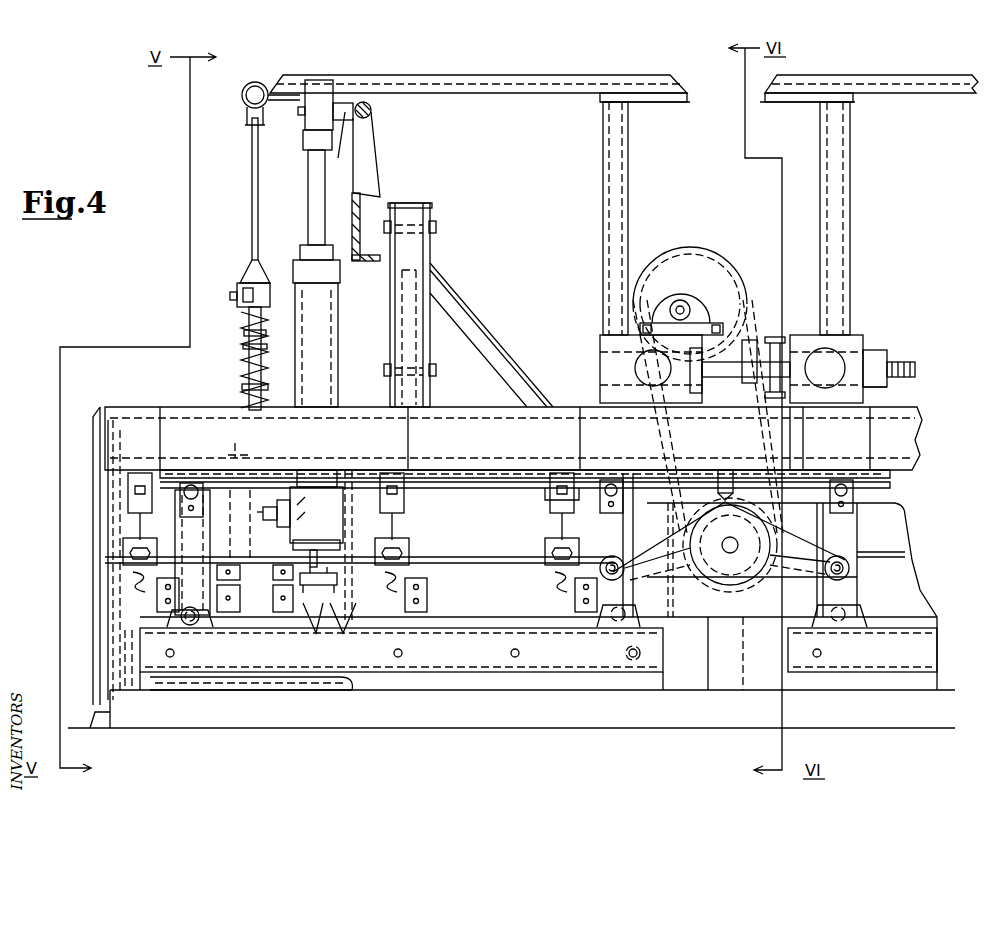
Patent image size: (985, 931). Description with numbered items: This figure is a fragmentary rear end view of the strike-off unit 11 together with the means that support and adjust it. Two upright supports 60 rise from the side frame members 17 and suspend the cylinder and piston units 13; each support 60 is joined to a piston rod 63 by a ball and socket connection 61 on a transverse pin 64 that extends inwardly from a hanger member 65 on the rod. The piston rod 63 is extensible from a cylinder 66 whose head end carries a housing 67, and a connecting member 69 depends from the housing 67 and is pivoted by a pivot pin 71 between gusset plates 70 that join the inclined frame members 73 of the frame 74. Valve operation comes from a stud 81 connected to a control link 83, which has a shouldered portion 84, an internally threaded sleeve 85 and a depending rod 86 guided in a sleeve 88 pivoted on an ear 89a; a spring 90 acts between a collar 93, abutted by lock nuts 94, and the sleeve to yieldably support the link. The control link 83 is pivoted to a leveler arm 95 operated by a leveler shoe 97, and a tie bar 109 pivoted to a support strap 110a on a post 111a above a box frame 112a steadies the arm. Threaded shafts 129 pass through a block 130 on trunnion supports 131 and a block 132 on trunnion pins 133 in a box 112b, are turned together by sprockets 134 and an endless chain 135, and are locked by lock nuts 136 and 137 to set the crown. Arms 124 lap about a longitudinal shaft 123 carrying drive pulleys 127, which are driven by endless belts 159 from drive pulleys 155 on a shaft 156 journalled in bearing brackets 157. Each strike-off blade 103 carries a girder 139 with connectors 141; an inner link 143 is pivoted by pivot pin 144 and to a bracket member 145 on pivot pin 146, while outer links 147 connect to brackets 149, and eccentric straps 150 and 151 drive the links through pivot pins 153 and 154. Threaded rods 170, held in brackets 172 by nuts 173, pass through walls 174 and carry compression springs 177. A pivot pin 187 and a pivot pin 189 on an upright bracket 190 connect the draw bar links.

The strike-off unit 11 is at (157, 408).
The cylinder and piston unit 13 is at (348, 337).
The side frame member 17 is at (382, 197).
The upright support 60 is at (378, 152).
The ball and socket connection 61 is at (372, 110).
The piston rod 63 is at (311, 203).
The transverse pin 64 is at (340, 138).
The hanger member 65 is at (320, 88).
The cylinder 66 is at (340, 360).
The housing 67 is at (335, 527).
The connecting member 69 is at (297, 556).
The gusset plate 70 is at (318, 614).
The pivot pin 71 is at (348, 632).
The inclined frame member 73 is at (98, 561).
The frame 74 is at (84, 461).
The stud 81 is at (309, 518).
The control link 83 is at (252, 217).
The shouldered portion 84 is at (230, 296).
The internally threaded sleeve 85 is at (256, 312).
The rod 86 is at (284, 328).
The sleeve 88 is at (244, 387).
The ear 89a is at (235, 450).
The spring 90 is at (242, 373).
The collar 93 is at (242, 345).
The lock nuts 94 is at (248, 330).
The leveler arm 95 is at (255, 82).
The leveler shoe 97 is at (350, 695).
The strike-off blade 103 is at (690, 683).
The tie bar 109 is at (540, 78).
The support strap 110a is at (666, 104).
The post 111a is at (603, 205).
The box frame 112a is at (610, 347).
The box 112b is at (860, 340).
The longitudinal shaft 123 is at (725, 653).
The arm 124 is at (690, 517).
The drive pulley 127 is at (738, 572).
The threaded shaft 129 is at (893, 357).
The block 130 is at (600, 330).
The trunnion support 131 is at (651, 325).
The block 132 is at (787, 322).
The trunnion pin 133 is at (853, 325).
The sprocket 134 is at (782, 335).
The endless chain 135 is at (770, 335).
The lock nut 136 is at (708, 325).
The lock nut 137 is at (890, 384).
The box-like girder 139 is at (560, 662).
The connector 141 is at (208, 632).
The link 143 is at (620, 585).
The pivot pin 144 is at (608, 622).
The bracket member 145 is at (653, 470).
The pivot pin 146 is at (612, 482).
The outer link 147 is at (185, 590).
The bracket 149 is at (205, 487).
The eccentric strap 150 is at (687, 560).
The eccentric strap 151 is at (801, 572).
The pivot pin 153 is at (612, 560).
The pivot pin 154 is at (850, 568).
The drive pulley 155 is at (676, 247).
The shaft 156 is at (683, 300).
The bearing bracket 157 is at (670, 292).
The endless belt 159 is at (722, 300).
The threaded rod 170 is at (138, 505).
The bracket 172 is at (547, 486).
The nut 173 is at (550, 500).
The wall 174 is at (120, 550).
The compression spring 177 is at (136, 582).
The pivot pin 187 is at (436, 371).
The pivot pin 189 is at (436, 228).
The upright bracket 190 is at (433, 262).